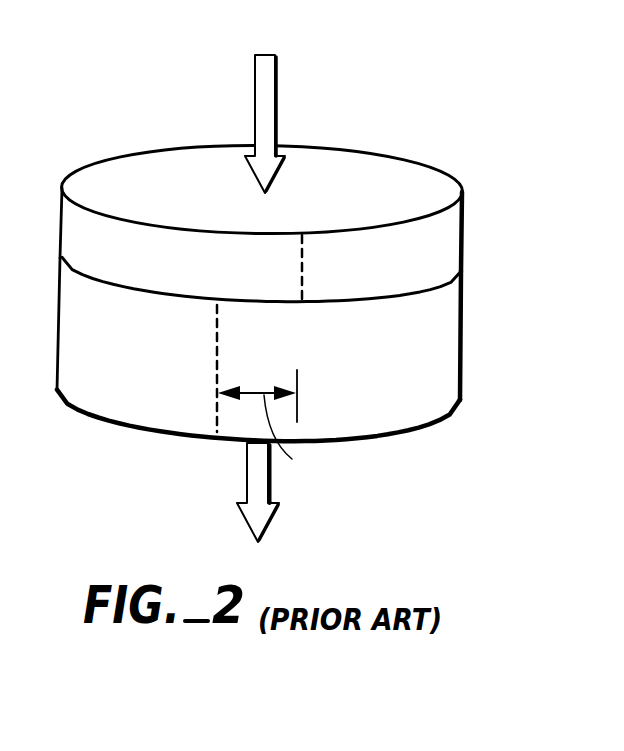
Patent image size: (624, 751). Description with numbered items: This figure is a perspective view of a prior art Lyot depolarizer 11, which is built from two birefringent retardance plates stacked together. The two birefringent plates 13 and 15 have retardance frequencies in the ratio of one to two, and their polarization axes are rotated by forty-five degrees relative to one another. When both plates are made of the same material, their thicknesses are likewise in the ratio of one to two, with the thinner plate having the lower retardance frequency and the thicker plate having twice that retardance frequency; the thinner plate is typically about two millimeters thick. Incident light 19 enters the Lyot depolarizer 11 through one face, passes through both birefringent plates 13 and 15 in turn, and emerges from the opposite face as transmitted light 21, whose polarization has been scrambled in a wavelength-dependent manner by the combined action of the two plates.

The Lyot depolarizer 11 is at (164, 76).
The birefringent plate 13 is at (447, 258).
The birefringent plate 15 is at (447, 388).
The incident light 19 is at (277, 100).
The transmitted light 21 is at (268, 488).